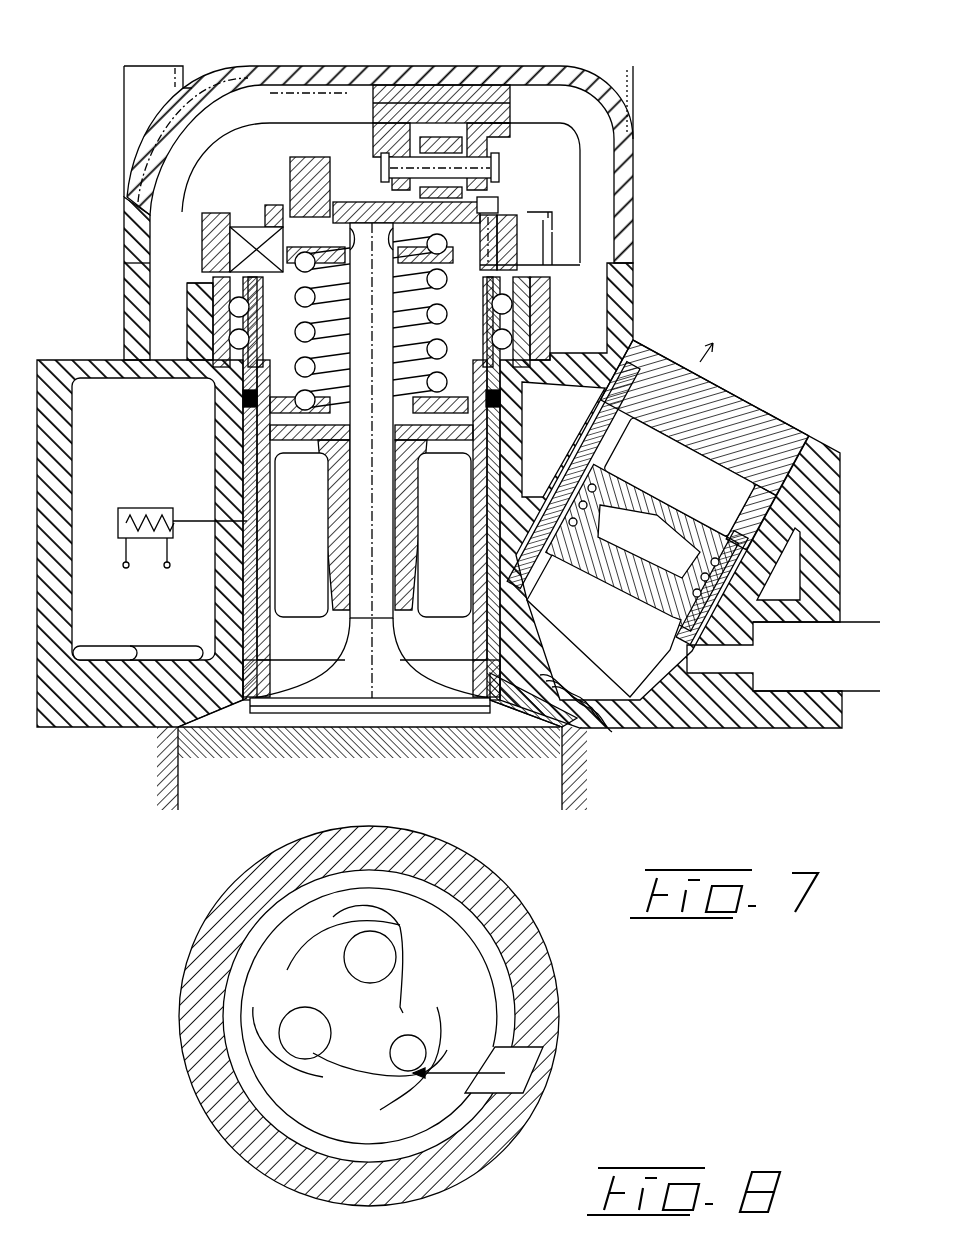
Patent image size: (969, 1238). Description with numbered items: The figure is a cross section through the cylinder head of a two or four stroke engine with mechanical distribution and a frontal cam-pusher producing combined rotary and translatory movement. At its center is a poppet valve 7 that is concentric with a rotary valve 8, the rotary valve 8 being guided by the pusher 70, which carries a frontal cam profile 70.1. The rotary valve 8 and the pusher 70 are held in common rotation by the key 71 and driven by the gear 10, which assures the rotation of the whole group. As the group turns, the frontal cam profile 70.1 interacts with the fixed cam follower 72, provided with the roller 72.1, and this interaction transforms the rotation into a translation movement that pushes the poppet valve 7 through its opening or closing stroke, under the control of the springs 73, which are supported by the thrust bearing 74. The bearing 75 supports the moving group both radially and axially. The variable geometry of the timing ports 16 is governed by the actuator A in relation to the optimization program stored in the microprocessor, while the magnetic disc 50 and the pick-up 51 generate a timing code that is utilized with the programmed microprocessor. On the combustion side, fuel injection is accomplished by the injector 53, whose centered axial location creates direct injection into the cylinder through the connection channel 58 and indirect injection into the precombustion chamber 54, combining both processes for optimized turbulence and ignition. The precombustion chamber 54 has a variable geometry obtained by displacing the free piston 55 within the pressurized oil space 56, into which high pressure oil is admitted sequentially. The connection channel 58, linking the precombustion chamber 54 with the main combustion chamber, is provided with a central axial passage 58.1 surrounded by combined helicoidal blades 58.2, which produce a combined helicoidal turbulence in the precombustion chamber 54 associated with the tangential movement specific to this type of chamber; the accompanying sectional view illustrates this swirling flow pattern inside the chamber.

The poppet valve 7 is at (338, 697).
The rotary valve 8 is at (287, 590).
The gear 10 is at (215, 225).
The timing ports 16 is at (253, 567).
The magnetic disc 50 is at (527, 213).
The pick-up 51 is at (560, 237).
The injector 53 is at (848, 663).
The precombustion chamber 54 is at (640, 655).
The free piston 55 is at (753, 520).
The pressurized oil space 56 is at (697, 473).
The connection channel 58 is at (580, 733).
The central axial passage 58.1 is at (583, 737).
The combined helicoidal blades 58.2 is at (587, 740).
The pusher 70 is at (212, 363).
The frontal cam profile 70.1 is at (287, 157).
The key 71 is at (240, 250).
The fixed cam follower 72 is at (432, 137).
The roller 72.1 is at (465, 147).
The springs 73 is at (243, 397).
The thrust bearing 74 is at (275, 450).
The bearing 75 is at (215, 297).
The actuator A is at (182, 544).